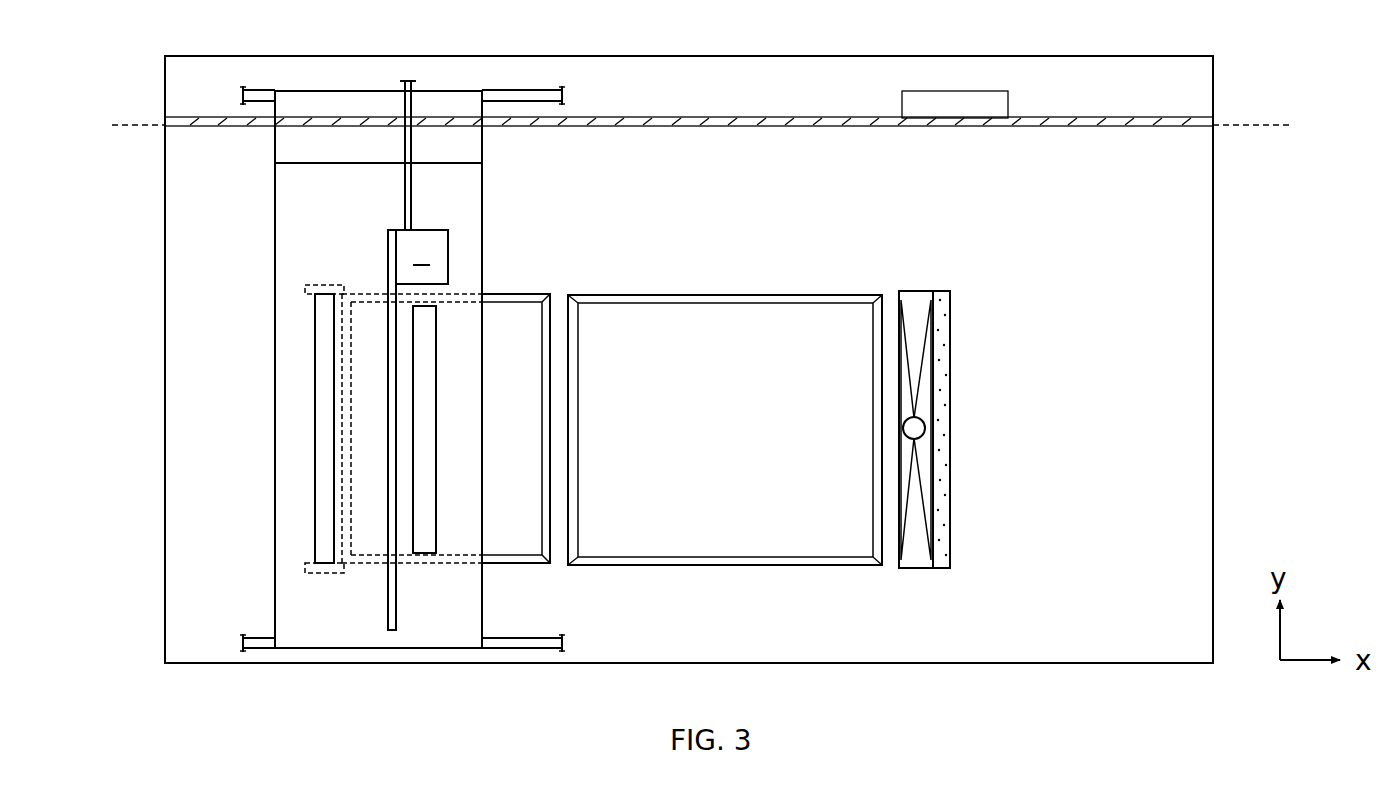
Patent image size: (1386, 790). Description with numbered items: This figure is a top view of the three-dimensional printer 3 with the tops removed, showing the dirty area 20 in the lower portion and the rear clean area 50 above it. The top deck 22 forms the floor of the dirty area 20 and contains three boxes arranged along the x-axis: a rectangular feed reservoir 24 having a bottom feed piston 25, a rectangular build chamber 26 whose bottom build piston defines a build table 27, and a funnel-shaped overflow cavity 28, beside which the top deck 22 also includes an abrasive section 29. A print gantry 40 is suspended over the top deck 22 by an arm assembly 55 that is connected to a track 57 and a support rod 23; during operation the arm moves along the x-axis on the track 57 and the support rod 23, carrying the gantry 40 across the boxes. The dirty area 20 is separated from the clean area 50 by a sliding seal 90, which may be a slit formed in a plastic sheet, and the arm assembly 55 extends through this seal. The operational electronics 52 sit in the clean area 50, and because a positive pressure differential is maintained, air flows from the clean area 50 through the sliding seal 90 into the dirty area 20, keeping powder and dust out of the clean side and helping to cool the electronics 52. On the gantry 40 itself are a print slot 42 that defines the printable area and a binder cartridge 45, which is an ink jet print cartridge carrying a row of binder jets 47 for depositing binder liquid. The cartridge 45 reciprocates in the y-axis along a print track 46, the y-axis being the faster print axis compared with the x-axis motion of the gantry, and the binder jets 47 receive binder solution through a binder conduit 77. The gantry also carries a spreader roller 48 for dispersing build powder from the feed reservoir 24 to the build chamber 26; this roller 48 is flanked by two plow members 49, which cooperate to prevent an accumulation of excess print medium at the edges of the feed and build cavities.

The three-dimensional printer 3 is at (1352, 116).
The rear clean area 50 is at (1238, 36).
The dirty area 20 is at (1261, 236).
The top deck 22 is at (1198, 369).
The support rod 23 is at (519, 643).
The feed reservoir 24 is at (508, 319).
The feed piston 25 is at (516, 428).
The build chamber 26 is at (736, 319).
The build table 27 is at (725, 430).
The overflow cavity 28 is at (917, 300).
The abrasive section 29 is at (942, 545).
The print gantry 40 is at (308, 641).
The print slot 42 is at (428, 545).
The binder cartridge 45 is at (432, 243).
The print track 46 is at (398, 618).
The binder jets 47 is at (425, 268).
The spreader roller 48 is at (322, 419).
The plow members 49 is at (325, 285).
The operational electronics 52 is at (975, 93).
The arm assembly 55 is at (325, 98).
The track 57 is at (505, 93).
The binder conduit 77 is at (410, 95).
The sliding seal 90 is at (1125, 120).